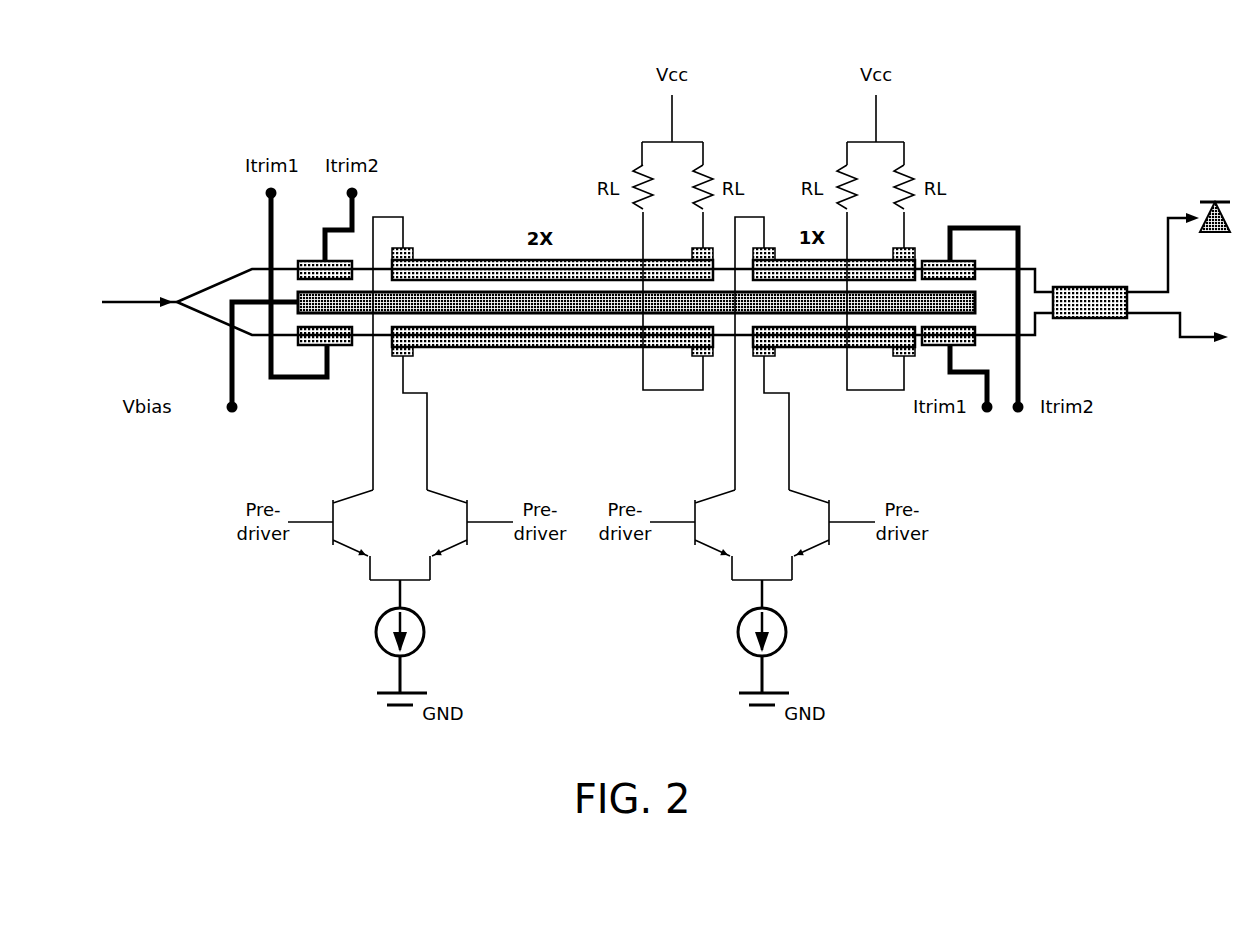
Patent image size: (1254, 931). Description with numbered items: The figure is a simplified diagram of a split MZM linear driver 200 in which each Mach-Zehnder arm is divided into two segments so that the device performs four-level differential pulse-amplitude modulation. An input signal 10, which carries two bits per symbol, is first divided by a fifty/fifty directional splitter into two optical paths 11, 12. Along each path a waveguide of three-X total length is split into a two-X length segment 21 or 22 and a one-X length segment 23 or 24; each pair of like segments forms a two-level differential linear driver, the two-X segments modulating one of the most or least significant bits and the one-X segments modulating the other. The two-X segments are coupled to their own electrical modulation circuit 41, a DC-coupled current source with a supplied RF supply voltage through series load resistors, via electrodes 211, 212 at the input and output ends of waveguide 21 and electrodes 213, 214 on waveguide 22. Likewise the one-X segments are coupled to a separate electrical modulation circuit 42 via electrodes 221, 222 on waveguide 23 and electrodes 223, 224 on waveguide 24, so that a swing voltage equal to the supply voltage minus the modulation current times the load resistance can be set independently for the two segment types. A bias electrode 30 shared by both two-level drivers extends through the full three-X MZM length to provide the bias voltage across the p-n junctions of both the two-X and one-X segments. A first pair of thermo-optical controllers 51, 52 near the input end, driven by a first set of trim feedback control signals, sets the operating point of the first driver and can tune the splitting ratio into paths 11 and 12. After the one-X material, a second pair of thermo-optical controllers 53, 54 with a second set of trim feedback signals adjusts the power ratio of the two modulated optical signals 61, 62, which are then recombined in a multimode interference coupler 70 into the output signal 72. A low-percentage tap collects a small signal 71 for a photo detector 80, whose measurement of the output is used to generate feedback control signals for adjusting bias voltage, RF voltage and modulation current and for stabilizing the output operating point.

The MZM linear driver 200 is at (438, 62).
The input signal 10 is at (152, 298).
The optical path 11 is at (228, 284).
The optical path 12 is at (247, 338).
The 2X length segment 21 is at (437, 260).
The 2X length segment 22 is at (475, 348).
The 1X length segment 23 is at (790, 258).
The 1X length segment 24 is at (820, 348).
The bias electrode 30 is at (545, 292).
The electrical modulation circuit 41 is at (425, 625).
The electrical modulation circuit 42 is at (787, 625).
The thermo-optical controller 51 is at (309, 261).
The thermo-optical controller 52 is at (340, 346).
The thermo-optical controller 53 is at (940, 260).
The thermo-optical controller 54 is at (940, 347).
The modulated optical signal 61 is at (1033, 268).
The modulated optical signal 62 is at (1030, 338).
The MMI coupler 70 is at (1080, 287).
The small signal 71 is at (1168, 250).
The output signal 72 is at (1192, 340).
The photo detector 80 is at (1213, 201).
The electrode 211 is at (407, 248).
The electrode 212 is at (700, 248).
The electrode 213 is at (414, 356).
The electrode 214 is at (700, 357).
The electrode 221 is at (758, 247).
The electrode 222 is at (897, 248).
The electrode 223 is at (779, 356).
The electrode 224 is at (898, 357).